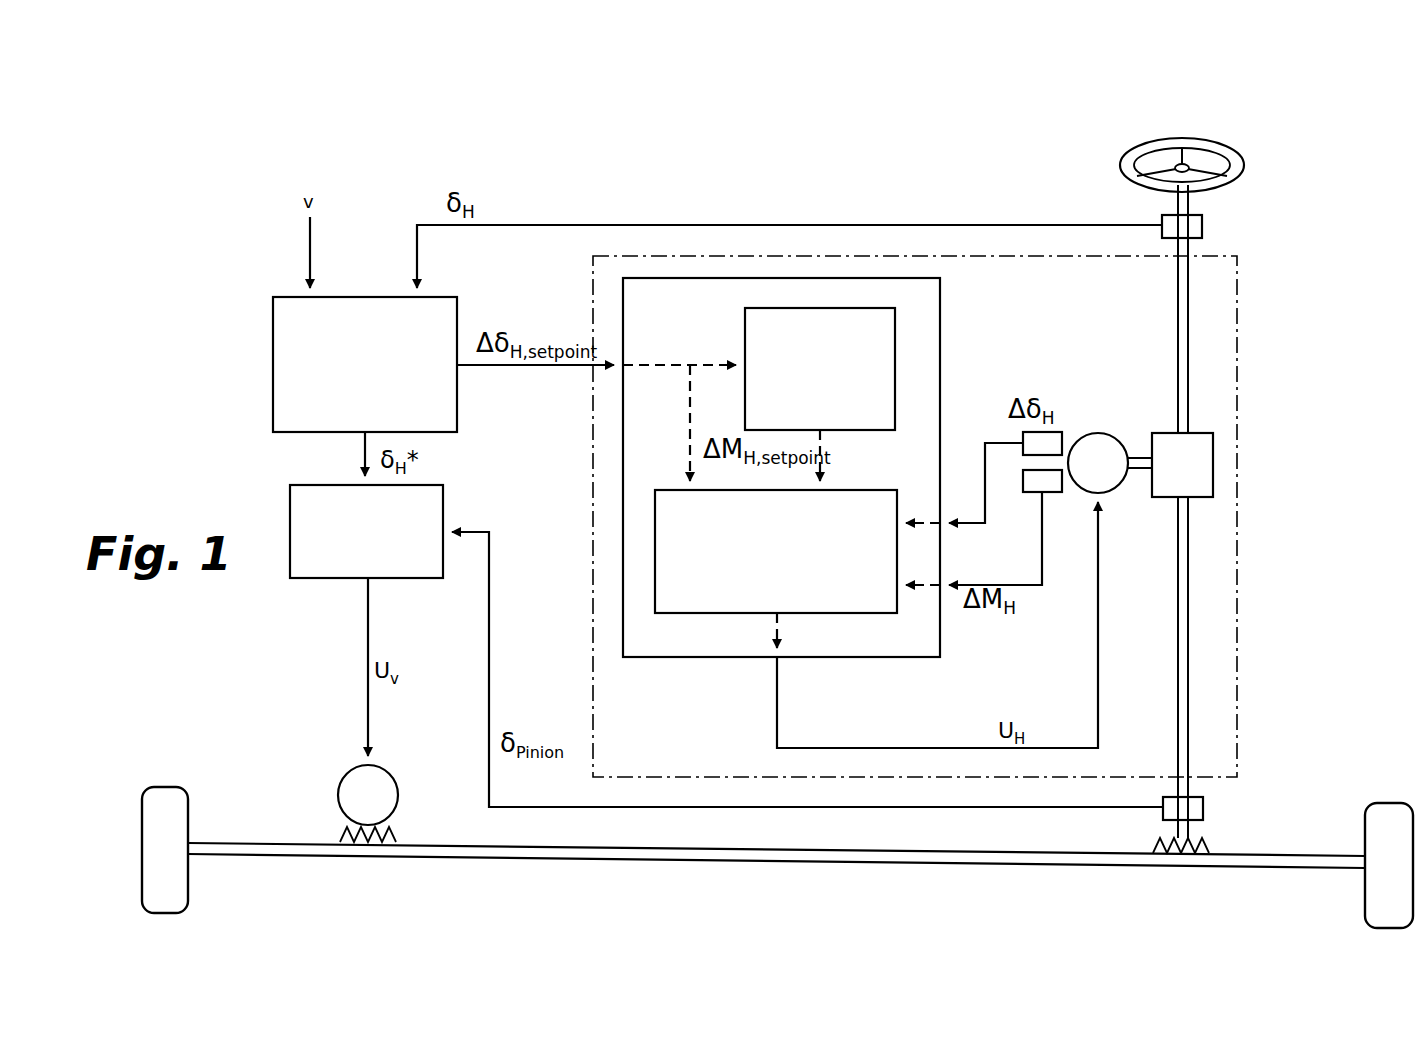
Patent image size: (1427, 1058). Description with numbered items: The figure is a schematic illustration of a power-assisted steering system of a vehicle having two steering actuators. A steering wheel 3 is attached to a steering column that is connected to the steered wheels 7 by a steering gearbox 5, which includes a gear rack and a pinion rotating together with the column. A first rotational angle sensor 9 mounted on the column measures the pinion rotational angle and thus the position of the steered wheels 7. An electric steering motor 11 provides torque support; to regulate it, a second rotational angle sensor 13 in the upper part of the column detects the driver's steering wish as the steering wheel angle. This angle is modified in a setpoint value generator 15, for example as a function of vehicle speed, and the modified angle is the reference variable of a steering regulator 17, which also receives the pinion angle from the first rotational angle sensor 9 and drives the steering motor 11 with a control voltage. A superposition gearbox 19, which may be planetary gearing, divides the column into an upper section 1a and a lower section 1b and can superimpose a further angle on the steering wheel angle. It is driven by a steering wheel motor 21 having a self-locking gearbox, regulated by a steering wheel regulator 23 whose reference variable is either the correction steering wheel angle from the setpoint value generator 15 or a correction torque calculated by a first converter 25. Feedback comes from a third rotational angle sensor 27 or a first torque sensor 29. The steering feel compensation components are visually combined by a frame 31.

The steering column section 1a is at (1185, 353).
The steering column section 1b is at (1185, 616).
The steering wheel 3 is at (1234, 156).
The steering gearbox 5 is at (1212, 844).
The steered wheels 7 is at (165, 795).
The first rotational angle sensor 9 is at (1195, 808).
The electric steering motor 11 is at (346, 797).
The second rotational angle sensor 13 is at (1195, 228).
The setpoint value generator 15 is at (378, 378).
The steering regulator 17 is at (373, 547).
The superposition gearbox 19 is at (1200, 465).
The steering wheel motor 21 is at (1100, 446).
The steering wheel regulator 23 is at (803, 566).
The first converter 25 is at (838, 383).
The third rotational angle sensor 27 is at (1028, 452).
The first torque sensor 29 is at (1052, 490).
The frame 31 is at (990, 255).